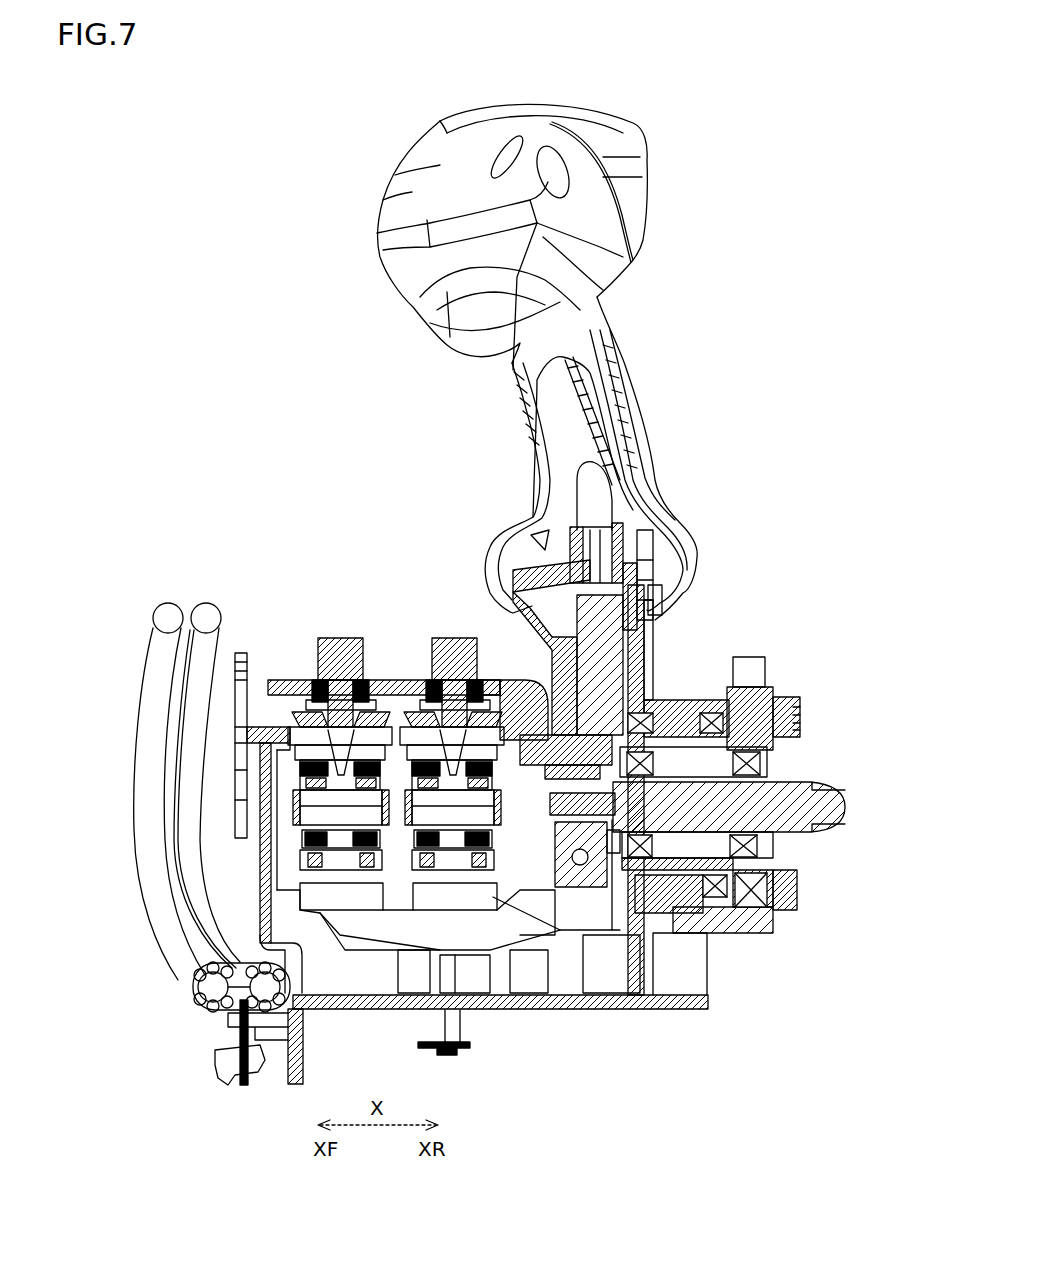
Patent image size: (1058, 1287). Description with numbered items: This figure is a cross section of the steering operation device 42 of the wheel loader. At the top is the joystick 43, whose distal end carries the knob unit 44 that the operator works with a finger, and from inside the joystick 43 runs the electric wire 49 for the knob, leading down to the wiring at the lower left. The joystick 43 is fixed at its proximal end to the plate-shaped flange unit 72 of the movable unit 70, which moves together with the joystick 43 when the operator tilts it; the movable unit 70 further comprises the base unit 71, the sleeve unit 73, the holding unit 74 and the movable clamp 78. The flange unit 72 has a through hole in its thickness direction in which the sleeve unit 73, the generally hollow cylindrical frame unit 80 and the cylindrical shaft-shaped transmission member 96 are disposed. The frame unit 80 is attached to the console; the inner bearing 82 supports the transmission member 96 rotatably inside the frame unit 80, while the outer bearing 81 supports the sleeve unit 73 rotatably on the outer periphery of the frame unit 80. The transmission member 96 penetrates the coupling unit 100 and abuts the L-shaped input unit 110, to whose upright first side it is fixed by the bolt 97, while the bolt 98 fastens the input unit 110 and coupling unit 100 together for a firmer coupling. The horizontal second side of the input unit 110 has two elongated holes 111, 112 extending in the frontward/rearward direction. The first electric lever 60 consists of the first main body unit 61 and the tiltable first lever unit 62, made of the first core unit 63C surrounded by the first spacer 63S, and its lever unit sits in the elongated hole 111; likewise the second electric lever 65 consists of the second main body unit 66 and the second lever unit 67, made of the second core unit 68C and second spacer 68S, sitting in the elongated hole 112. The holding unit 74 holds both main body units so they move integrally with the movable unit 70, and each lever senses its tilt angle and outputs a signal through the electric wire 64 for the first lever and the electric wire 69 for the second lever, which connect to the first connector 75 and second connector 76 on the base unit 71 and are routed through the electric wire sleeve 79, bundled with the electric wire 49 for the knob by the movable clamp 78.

The steering operation device 42 is at (268, 288).
The joystick 43 is at (620, 343).
The knob unit 44 is at (628, 190).
The electric wire for the knob 49 is at (195, 893).
The first electric lever 60 is at (288, 722).
The first main body unit 61 is at (343, 815).
The first lever unit 62 is at (337, 680).
The first core unit 63C is at (317, 680).
The first spacer 63S is at (320, 680).
The electric wire for the first lever 64 is at (397, 918).
The second electric lever 65 is at (417, 710).
The second main body unit 66 is at (523, 927).
The second lever unit 67 is at (450, 680).
The second core unit 68C is at (437, 678).
The second spacer 68S is at (440, 680).
The electric wire for the second lever 69 is at (538, 1010).
The movable unit 70 is at (690, 1012).
The base unit 71 is at (600, 990).
The flange unit 72 is at (650, 635).
The sleeve unit 73 is at (693, 713).
The holding unit 74 is at (262, 920).
The first connector 75 is at (475, 1010).
The second connector 76 is at (580, 1010).
The movable clamp 78 is at (197, 1007).
The electric wire sleeve 79 is at (175, 938).
The frame unit 80 is at (745, 698).
The outer bearing 81 is at (713, 710).
The inner bearing 82 is at (763, 745).
The transmission member 96 is at (810, 803).
The bolt 97 is at (623, 800).
The bolt 98 is at (530, 737).
The coupling unit 100 is at (595, 875).
The input unit 110 is at (500, 680).
The elongated hole 111 is at (367, 683).
The elongated hole 112 is at (483, 680).